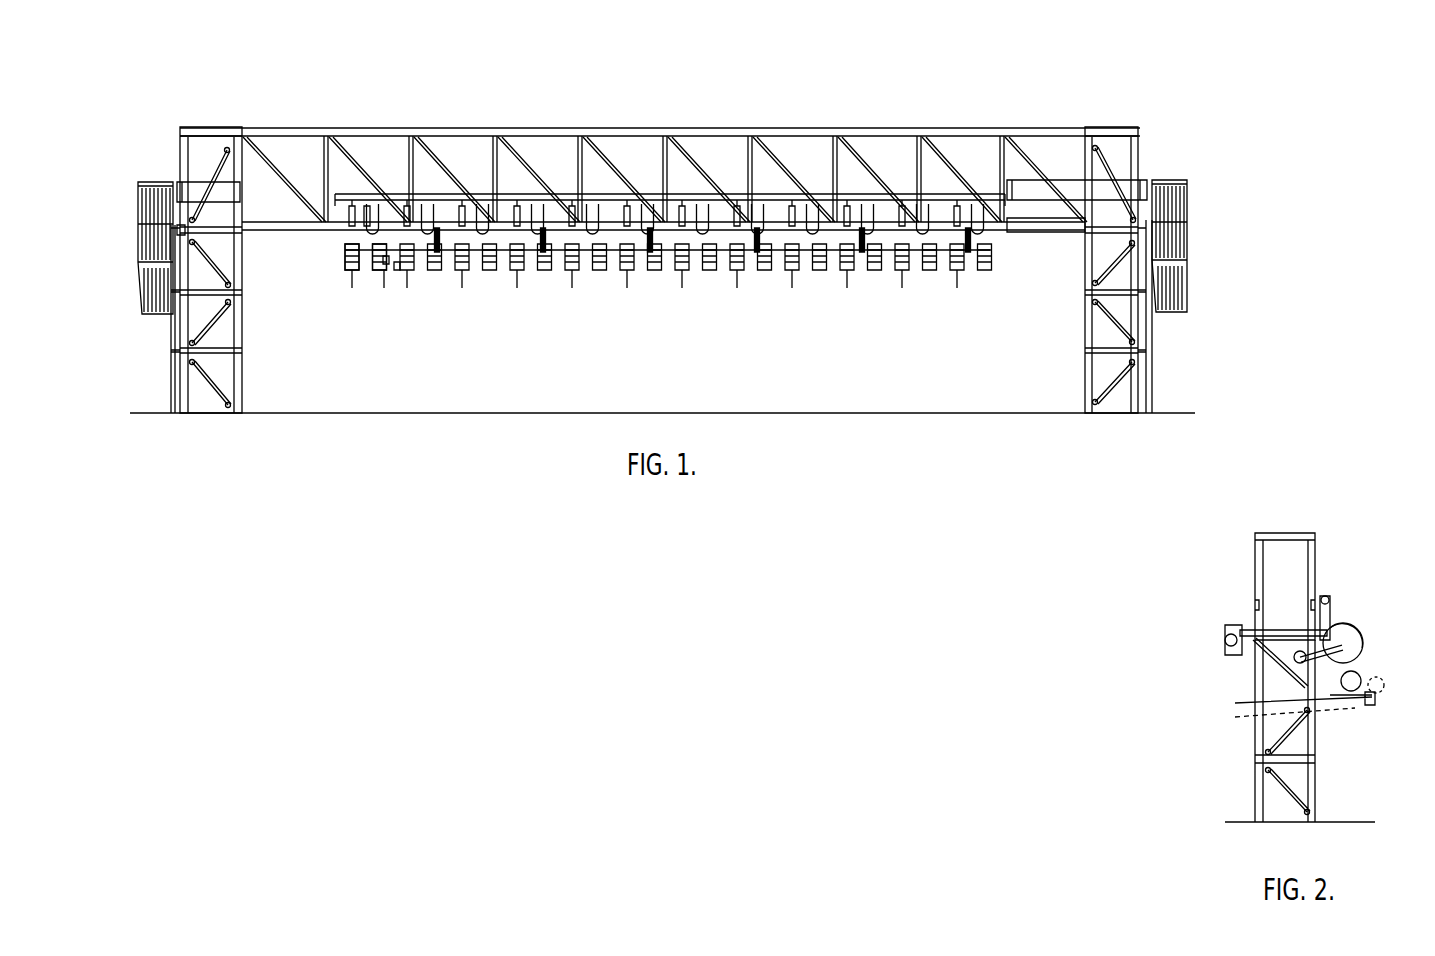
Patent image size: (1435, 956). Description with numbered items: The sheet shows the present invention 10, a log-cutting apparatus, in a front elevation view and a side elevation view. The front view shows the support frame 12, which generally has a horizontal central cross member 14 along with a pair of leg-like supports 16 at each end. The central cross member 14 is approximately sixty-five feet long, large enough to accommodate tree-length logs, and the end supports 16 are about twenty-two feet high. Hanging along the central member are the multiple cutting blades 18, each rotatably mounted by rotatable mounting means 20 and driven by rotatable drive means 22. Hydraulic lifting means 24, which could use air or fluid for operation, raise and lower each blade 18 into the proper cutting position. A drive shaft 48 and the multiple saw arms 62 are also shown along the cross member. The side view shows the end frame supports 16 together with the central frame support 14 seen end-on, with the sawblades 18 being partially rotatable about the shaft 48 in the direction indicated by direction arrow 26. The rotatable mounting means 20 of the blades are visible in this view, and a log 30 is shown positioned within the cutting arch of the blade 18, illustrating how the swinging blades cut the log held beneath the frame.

In FIG. 1, the present invention 10 is at (1106, 90).
In FIG. 2, the present invention 10 is at (1342, 492).
In FIG. 1, the support frame 12 is at (1145, 148).
In FIG. 1, the horizontal central cross member 14 is at (598, 106).
In FIG. 2, the horizontal central cross member 14 is at (1290, 533).
In FIG. 1, the leg-like supports 16 is at (165, 382).
In FIG. 2, the leg-like supports 16 is at (1317, 799).
In FIG. 1, the cutting blades 18 is at (387, 290).
In FIG. 2, the cutting blades 18 is at (1342, 613).
In FIG. 1, the rotatable mounting means 20 is at (385, 264).
In FIG. 2, the rotatable mounting means 20 is at (1358, 622).
In FIG. 1, the rotatable drive means 22 is at (397, 270).
In FIG. 1, the hydraulic lifting means 24 is at (368, 217).
In FIG. 2, the direction arrow 26 is at (1372, 624).
In FIG. 2, the log 30 is at (1353, 712).
In FIG. 1, the drive shaft 48 is at (380, 246).
In FIG. 2, the drive shaft 48 is at (1302, 633).
In FIG. 1, the saw arm 62 is at (334, 274).